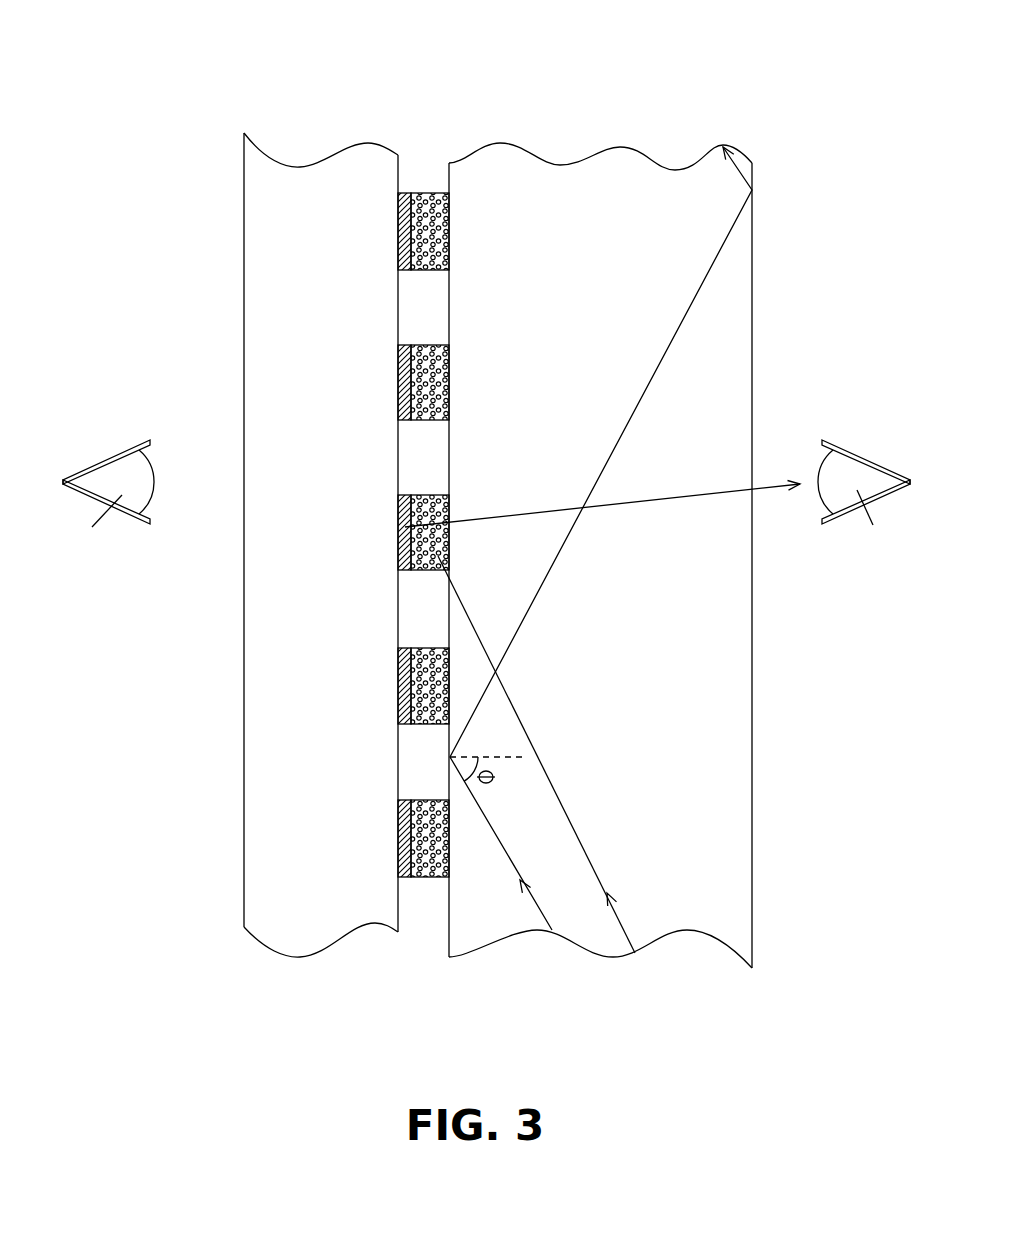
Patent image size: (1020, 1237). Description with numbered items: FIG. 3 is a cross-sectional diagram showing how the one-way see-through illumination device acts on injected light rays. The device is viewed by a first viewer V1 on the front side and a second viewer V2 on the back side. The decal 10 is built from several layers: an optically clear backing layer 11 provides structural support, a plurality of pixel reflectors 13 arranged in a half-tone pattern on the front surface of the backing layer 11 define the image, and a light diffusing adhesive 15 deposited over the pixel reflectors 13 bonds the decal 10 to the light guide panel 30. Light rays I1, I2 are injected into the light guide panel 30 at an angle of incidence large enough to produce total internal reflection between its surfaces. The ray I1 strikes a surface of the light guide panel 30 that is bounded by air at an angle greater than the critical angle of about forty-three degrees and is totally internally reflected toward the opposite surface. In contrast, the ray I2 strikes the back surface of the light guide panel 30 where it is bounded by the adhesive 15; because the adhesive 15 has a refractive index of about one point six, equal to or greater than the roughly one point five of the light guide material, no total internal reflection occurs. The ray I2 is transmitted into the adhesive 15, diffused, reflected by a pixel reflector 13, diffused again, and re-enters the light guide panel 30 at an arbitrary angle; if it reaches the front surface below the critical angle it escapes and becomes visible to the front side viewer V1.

The decal 10 is at (449, 109).
The optically clear backing layer 11 is at (302, 883).
The pixel reflectors 13 is at (405, 527).
The adhesive layer 15 is at (398, 495).
The light guide panel 30 is at (585, 780).
The injected light ray I1 is at (491, 835).
The injected light ray I2 is at (592, 870).
The first viewer V1 is at (657, 507).
The second viewer V2 is at (108, 507).